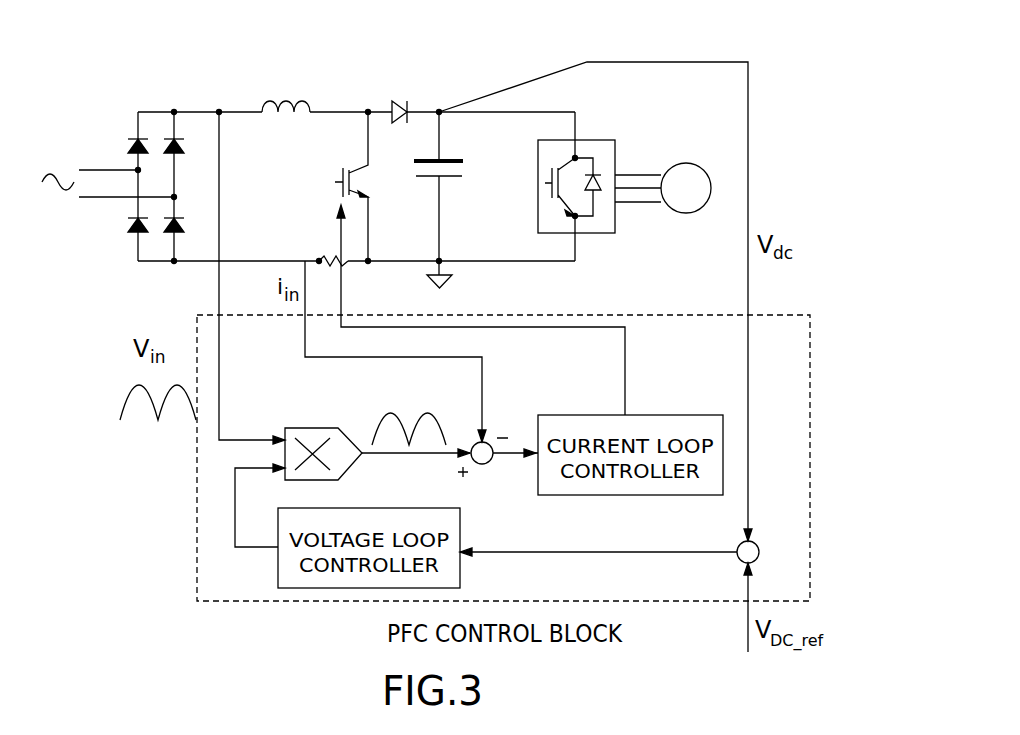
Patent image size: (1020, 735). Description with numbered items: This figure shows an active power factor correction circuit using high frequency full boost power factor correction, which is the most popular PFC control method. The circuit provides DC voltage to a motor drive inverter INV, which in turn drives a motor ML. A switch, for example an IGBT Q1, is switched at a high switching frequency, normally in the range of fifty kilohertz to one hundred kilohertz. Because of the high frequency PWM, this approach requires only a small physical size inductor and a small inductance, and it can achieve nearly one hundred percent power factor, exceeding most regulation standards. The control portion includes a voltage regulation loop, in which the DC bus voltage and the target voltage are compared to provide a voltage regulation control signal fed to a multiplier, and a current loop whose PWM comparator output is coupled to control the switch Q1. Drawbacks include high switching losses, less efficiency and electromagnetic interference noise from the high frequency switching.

The IGBT switch Q1 is at (335, 186).
The motor drive inverter INV is at (585, 140).
The motor ML is at (687, 163).